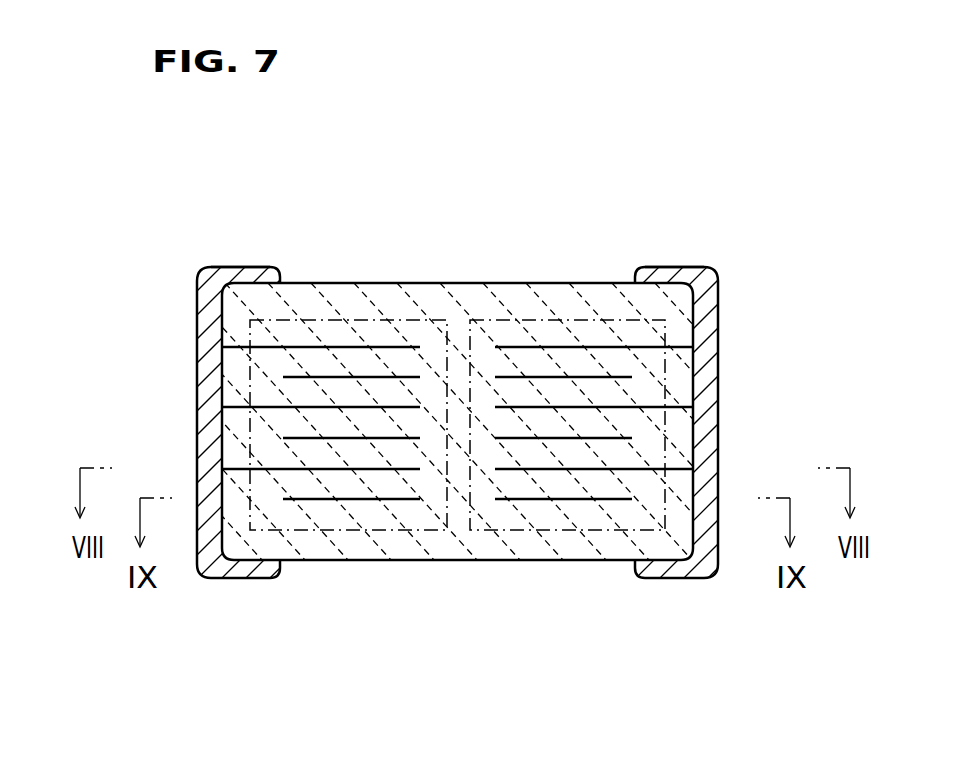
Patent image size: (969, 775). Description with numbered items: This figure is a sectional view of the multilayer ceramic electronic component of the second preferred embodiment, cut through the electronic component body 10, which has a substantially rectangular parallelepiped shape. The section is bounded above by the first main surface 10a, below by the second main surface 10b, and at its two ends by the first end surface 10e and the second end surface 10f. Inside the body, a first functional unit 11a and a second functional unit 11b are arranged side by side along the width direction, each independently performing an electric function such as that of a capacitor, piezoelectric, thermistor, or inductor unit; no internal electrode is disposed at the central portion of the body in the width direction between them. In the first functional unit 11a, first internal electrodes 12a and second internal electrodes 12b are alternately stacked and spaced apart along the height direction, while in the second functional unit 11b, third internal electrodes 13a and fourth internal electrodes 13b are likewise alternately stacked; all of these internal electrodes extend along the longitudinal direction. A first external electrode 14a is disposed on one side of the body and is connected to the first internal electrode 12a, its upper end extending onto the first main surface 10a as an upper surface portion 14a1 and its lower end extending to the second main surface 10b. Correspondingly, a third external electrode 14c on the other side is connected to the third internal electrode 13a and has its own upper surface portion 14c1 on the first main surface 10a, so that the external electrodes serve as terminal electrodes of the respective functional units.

The electronic component body 10 is at (556, 275).
The first main surface 10a is at (488, 283).
The second main surface 10b is at (450, 560).
The first end surface 10e is at (222, 432).
The second end surface 10f is at (697, 378).
The first functional unit 11a is at (584, 318).
The second functional unit 11b is at (312, 318).
The first internal electrode 12a is at (697, 301).
The second internal electrode 12b is at (693, 353).
The third internal electrode 13a is at (387, 347).
The fourth internal electrode 13b is at (370, 500).
The first external electrode 14a is at (735, 433).
The upper surface portion 14a1 is at (670, 266).
The third external electrode 14c is at (186, 322).
The upper surface portion 14c1 is at (240, 266).